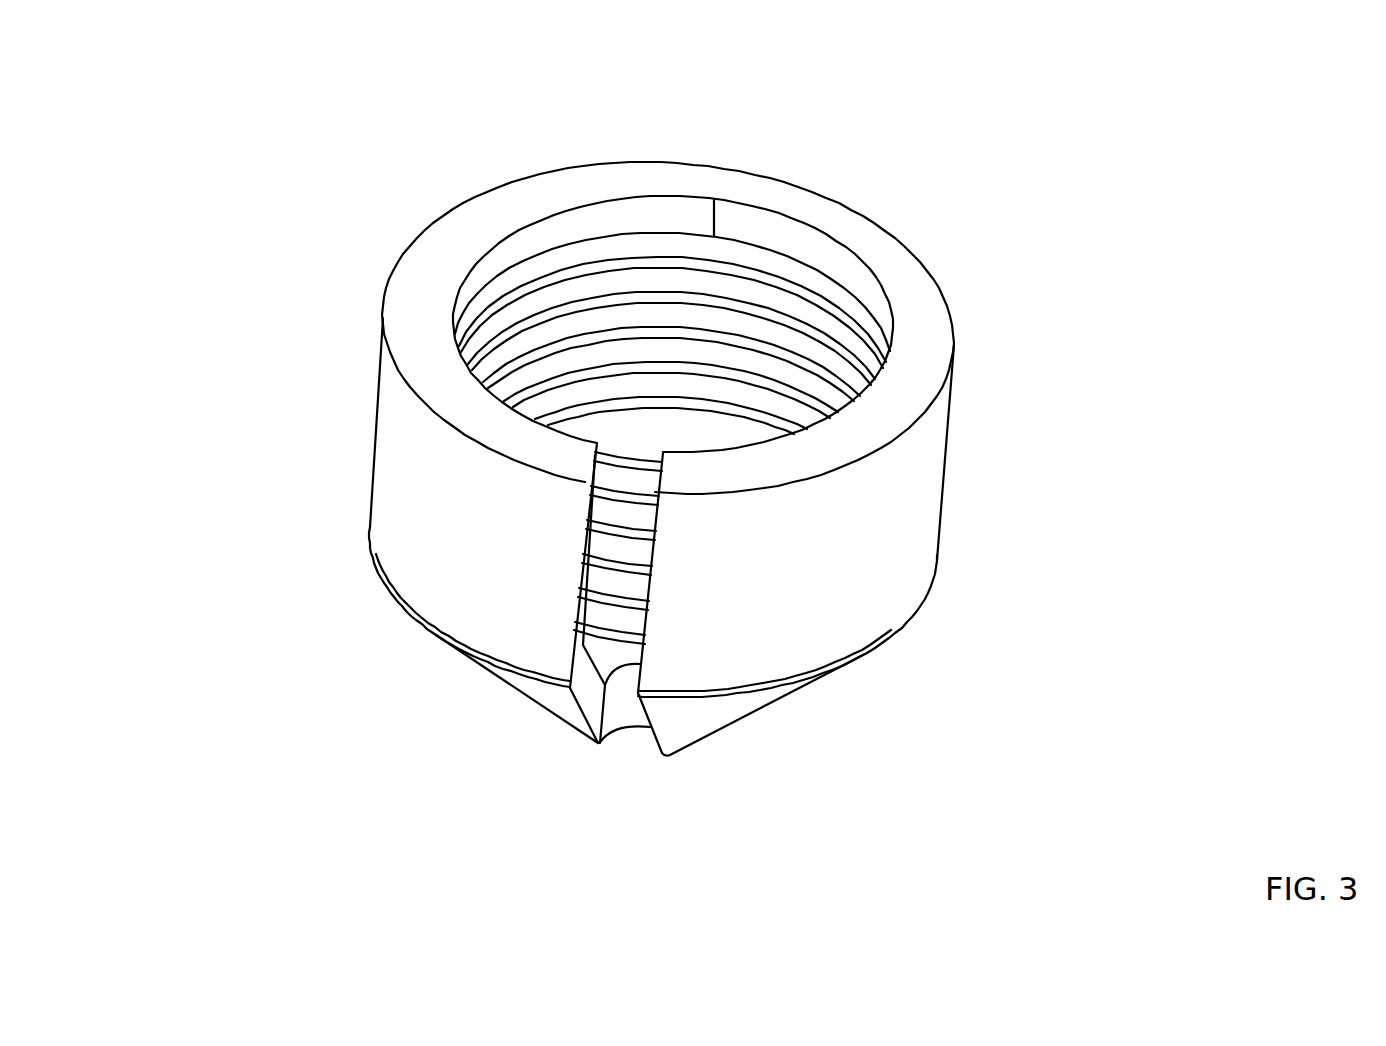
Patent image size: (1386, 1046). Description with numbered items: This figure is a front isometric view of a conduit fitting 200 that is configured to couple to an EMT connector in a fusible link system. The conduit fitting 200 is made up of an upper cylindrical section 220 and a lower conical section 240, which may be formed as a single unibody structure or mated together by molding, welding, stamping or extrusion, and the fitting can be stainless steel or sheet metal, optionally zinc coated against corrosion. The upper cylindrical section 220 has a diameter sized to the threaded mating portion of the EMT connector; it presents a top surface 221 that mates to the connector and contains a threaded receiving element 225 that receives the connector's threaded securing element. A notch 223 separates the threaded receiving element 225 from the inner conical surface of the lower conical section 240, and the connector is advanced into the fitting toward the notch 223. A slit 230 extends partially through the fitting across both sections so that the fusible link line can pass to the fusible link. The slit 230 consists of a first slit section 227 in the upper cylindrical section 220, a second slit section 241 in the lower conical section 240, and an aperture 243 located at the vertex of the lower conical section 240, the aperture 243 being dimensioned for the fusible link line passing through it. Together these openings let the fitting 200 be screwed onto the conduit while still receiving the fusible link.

The conduit fitting 200 is at (312, 132).
The upper cylindrical section 220 is at (876, 497).
The top surface 221 is at (854, 232).
The notch 223 is at (659, 381).
The threaded receiving element 225 is at (535, 334).
The first slit section 227 is at (602, 530).
The slit 230 is at (594, 578).
The lower conical section 240 is at (715, 718).
The second slit section 241 is at (574, 703).
The aperture 243 is at (618, 728).